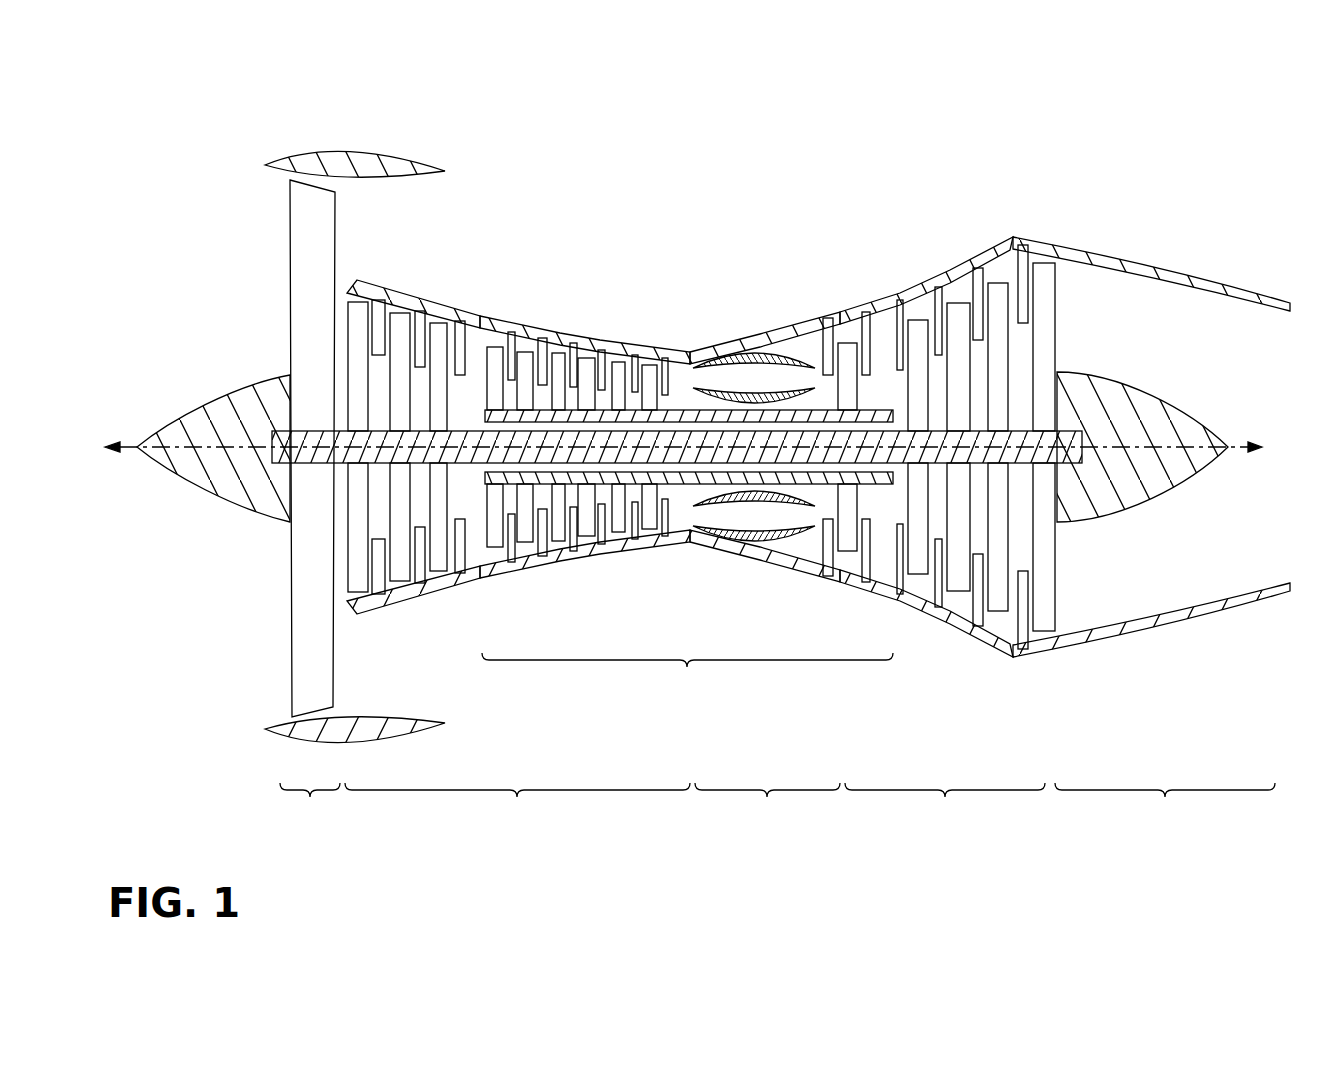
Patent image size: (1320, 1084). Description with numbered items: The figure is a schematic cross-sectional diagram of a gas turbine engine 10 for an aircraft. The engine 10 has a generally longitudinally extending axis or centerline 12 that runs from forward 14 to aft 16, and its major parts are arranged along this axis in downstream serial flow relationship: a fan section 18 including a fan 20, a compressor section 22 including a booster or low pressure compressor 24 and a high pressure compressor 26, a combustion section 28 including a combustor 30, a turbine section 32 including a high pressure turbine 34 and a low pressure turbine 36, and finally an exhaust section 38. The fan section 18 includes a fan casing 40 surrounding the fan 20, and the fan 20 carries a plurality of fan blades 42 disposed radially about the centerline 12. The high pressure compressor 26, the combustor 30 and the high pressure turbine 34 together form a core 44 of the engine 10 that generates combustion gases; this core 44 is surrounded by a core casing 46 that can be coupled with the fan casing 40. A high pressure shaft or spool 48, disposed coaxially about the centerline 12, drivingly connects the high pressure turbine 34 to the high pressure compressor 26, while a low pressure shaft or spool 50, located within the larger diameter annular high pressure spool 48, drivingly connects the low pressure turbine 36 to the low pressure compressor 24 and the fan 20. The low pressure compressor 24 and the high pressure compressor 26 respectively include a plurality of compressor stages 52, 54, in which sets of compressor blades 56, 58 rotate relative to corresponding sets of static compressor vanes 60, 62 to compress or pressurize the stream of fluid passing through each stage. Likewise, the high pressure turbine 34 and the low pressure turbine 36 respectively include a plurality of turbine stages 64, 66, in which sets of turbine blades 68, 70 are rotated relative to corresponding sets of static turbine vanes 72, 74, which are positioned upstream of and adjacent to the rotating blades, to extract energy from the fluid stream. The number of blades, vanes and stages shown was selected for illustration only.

The gas turbine engine 10 is at (158, 86).
The centerline 12 is at (192, 446).
The forward 14 is at (97, 447).
The aft 16 is at (1273, 447).
The fan section 18 is at (310, 806).
The fan 20 is at (290, 245).
The compressor section 22 is at (517, 805).
The LP compressor 24 is at (439, 421).
The HP compressor 26 is at (577, 429).
The combustion section 28 is at (767, 805).
The combustor 30 is at (808, 356).
The turbine section 32 is at (945, 805).
The HP turbine 34 is at (852, 430).
The LP turbine 36 is at (976, 429).
The exhaust section 38 is at (1165, 805).
The fan casing 40 is at (357, 150).
The fan blades 42 is at (300, 657).
The core 44 is at (687, 675).
The core casing 46 is at (732, 345).
The HP shaft 48 is at (690, 412).
The LP shaft 50 is at (470, 430).
The compressor stages 52 is at (345, 278).
The compressor stages 54 is at (497, 336).
The compressor blades 56 is at (366, 305).
The compressor blades 58 is at (508, 347).
The static compressor vanes 60 is at (388, 312).
The static compressor vanes 62 is at (520, 358).
The turbine stages 64 is at (852, 306).
The turbine stages 66 is at (977, 248).
The turbine blades 68 is at (870, 335).
The turbine blades 70 is at (1000, 298).
The static turbine vanes 72 is at (868, 330).
The static turbine vanes 74 is at (998, 300).